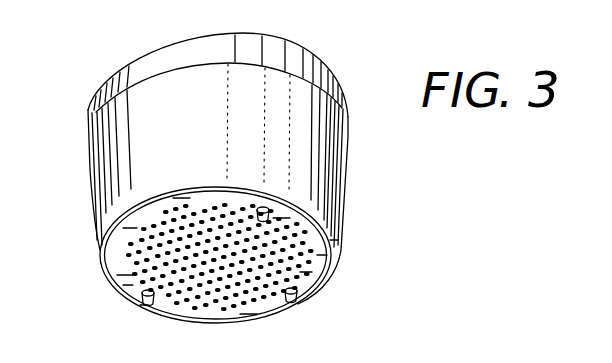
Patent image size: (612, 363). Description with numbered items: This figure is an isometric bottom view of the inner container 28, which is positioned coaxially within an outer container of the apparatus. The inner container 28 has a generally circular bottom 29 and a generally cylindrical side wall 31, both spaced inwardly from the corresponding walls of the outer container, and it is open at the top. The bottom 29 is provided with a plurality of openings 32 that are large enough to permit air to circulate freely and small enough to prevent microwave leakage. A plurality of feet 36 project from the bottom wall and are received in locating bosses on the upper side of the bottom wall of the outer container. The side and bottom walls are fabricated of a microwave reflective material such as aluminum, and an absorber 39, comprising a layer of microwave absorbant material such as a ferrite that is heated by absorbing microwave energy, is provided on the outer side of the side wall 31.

The inner container 28 is at (315, 62).
The bottom 29 is at (224, 316).
The side wall 31 is at (147, 63).
The openings 32 is at (145, 258).
The feet 36 is at (262, 208).
The absorber 39 is at (127, 133).